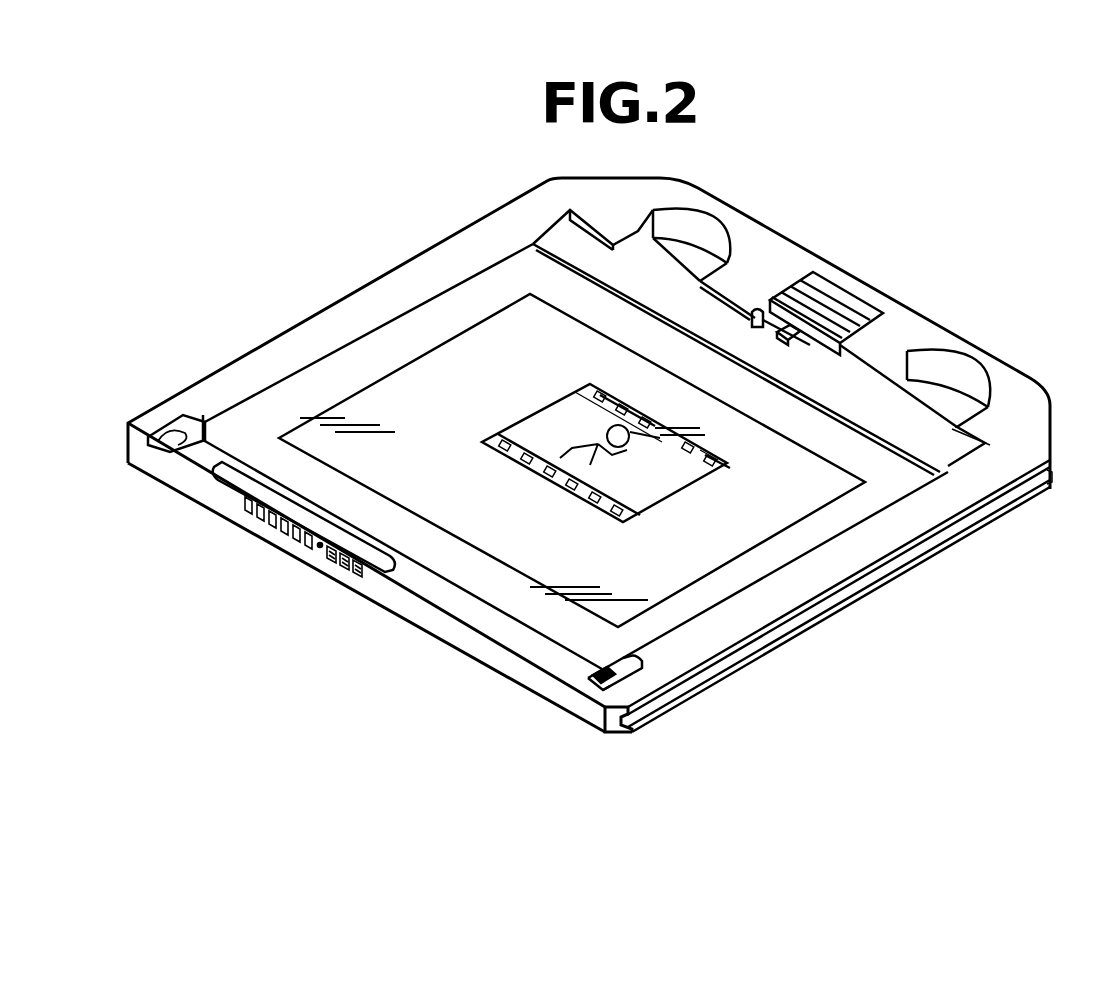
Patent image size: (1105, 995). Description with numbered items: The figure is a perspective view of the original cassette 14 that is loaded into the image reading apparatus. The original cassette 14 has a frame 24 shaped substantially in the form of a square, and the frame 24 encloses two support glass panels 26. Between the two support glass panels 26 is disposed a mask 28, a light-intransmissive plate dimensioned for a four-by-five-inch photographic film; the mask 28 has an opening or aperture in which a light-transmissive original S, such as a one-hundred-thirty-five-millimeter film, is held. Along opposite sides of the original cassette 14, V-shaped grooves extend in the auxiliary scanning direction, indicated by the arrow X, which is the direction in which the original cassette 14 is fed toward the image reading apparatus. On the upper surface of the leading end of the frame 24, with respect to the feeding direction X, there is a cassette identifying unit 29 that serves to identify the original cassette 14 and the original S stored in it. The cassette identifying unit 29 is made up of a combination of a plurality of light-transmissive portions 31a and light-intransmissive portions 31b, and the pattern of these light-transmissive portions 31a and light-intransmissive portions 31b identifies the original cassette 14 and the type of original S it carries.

The original cassette 14 is at (358, 626).
The frame 24 is at (903, 328).
The support glass panels 26 is at (398, 395).
The mask 28 is at (265, 420).
The cassette identifying unit 29 is at (225, 487).
The light-transmissive portions 31a is at (272, 516).
The light-intransmissive portions 31b is at (332, 544).
The original S is at (677, 481).
The auxiliary scanning direction X is at (802, 664).